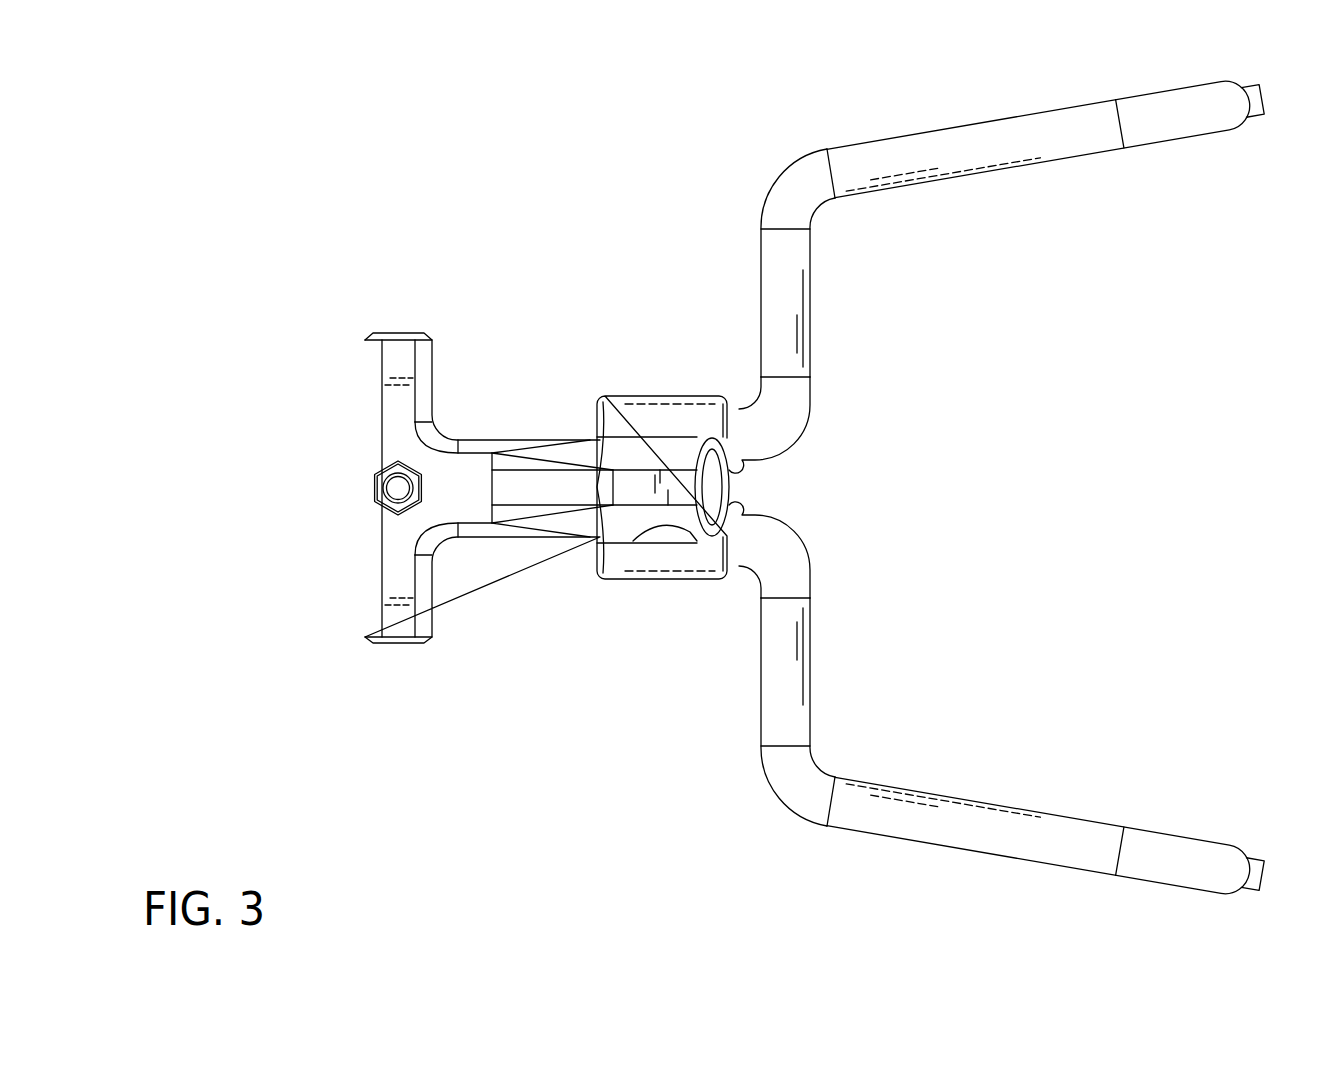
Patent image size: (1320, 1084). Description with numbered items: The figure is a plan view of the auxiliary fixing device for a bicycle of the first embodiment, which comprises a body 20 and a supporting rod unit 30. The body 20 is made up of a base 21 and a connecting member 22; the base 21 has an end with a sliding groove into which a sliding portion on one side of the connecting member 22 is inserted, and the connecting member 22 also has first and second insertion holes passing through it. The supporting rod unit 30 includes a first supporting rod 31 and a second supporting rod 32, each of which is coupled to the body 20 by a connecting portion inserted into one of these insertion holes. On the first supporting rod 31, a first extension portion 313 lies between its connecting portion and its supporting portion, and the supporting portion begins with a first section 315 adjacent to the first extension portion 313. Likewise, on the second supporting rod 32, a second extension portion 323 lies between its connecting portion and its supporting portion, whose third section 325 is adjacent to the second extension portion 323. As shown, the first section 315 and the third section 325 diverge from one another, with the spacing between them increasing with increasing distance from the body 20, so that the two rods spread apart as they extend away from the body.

The body 20 is at (509, 318).
The base 21 is at (443, 488).
The connecting member 22 is at (640, 568).
The supporting rod unit 30 is at (1062, 553).
The first supporting rod 31 is at (962, 727).
The first extension portion 313 is at (780, 697).
The first section 315 is at (967, 828).
The second supporting rod 32 is at (962, 261).
The second extension portion 323 is at (780, 296).
The third section 325 is at (958, 157).